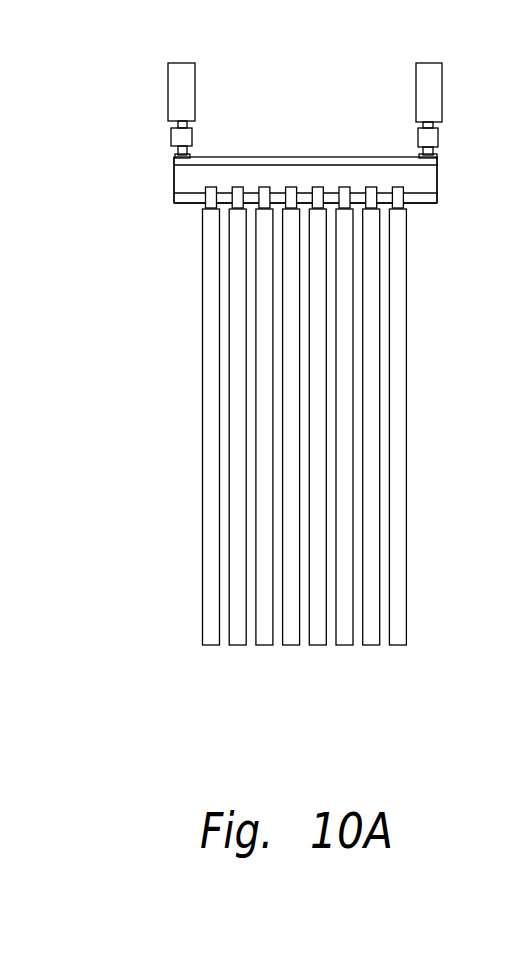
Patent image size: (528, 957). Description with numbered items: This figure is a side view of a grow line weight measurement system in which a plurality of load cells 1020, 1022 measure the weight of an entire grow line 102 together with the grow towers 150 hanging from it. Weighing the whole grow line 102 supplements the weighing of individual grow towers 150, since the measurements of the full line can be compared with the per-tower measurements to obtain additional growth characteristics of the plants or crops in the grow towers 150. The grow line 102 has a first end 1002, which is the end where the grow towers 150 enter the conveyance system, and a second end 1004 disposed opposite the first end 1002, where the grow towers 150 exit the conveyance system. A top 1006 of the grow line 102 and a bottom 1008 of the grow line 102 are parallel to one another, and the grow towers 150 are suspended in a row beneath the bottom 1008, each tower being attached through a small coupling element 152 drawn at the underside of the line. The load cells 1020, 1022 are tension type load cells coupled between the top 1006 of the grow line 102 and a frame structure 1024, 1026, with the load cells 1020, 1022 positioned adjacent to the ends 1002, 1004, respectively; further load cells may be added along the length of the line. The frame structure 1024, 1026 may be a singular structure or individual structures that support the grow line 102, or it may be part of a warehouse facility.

The grow line 102 is at (293, 175).
The grow towers 150 is at (212, 647).
The connection pads 152 is at (343, 187).
The first end 1002 is at (174, 177).
The second end 1004 is at (437, 178).
The top 1006 is at (231, 157).
The bottom 1008 is at (192, 203).
The load cell 1020 is at (171, 139).
The load cell 1022 is at (438, 138).
The frame structure 1024 is at (163, 93).
The frame structure 1026 is at (454, 86).